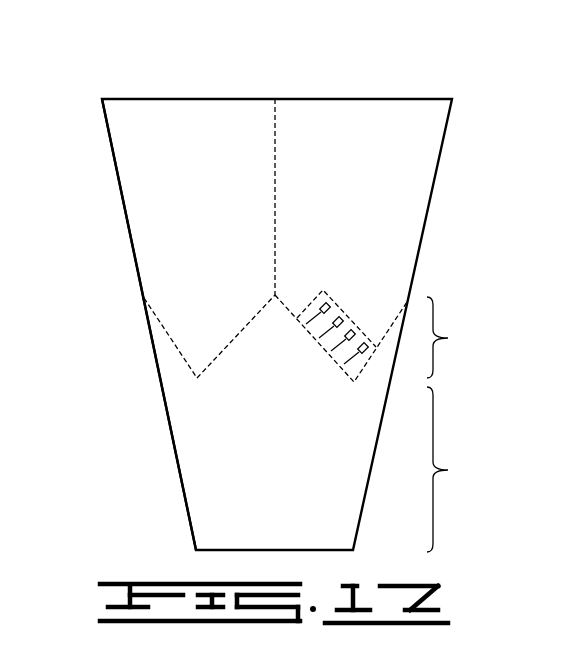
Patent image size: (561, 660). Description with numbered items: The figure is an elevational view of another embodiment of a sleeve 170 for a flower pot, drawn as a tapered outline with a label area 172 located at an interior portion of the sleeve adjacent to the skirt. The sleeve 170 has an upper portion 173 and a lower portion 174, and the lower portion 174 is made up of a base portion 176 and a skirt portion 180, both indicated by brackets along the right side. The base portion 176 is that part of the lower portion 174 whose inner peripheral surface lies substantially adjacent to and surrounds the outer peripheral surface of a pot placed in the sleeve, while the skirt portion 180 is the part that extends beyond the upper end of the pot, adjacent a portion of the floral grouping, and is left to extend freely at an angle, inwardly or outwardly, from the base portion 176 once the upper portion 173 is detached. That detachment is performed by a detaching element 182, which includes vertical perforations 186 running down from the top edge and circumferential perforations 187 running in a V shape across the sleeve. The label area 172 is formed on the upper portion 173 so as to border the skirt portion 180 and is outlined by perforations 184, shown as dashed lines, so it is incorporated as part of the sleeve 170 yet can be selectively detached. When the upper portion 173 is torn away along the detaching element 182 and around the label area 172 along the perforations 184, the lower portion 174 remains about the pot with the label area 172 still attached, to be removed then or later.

The sleeve 170 is at (198, 97).
The vertical perforations 186 is at (275, 158).
The upper portion 173 is at (136, 262).
The lower portion 174 is at (182, 482).
The circumferential perforations 187 is at (163, 325).
The detaching element 182 is at (242, 332).
The label area 172 is at (350, 320).
The perforations 184 is at (333, 302).
The skirt portion 180 is at (467, 337).
The base portion 176 is at (467, 469).